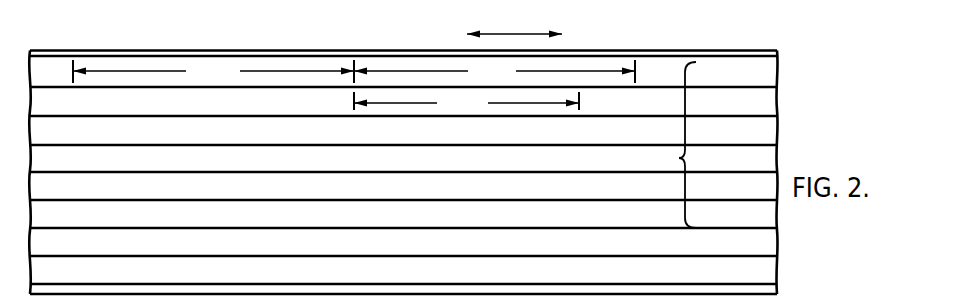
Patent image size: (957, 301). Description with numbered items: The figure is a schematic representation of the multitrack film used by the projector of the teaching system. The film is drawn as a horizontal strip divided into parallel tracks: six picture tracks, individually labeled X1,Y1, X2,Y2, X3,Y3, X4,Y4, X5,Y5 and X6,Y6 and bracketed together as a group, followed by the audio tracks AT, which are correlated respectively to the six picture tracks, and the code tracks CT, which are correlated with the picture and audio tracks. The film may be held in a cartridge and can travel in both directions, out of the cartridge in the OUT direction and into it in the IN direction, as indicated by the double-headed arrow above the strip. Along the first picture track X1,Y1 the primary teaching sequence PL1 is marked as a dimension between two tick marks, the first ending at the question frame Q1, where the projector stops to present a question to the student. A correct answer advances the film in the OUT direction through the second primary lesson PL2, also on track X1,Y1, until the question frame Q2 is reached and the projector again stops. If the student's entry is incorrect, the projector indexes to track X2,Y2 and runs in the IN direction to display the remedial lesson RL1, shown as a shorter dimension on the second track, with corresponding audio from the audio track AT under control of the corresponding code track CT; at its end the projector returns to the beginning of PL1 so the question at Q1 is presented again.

The question frame Q2 is at (73, 67).
The question frame Q1 is at (360, 64).
The second primary lesson PL2 is at (213, 72).
The primary lesson PL1 is at (494, 71).
The remedial lesson RL1 is at (466, 103).
The IN direction IN is at (503, 35).
The OUT direction OUT is at (586, 35).
The picture track X1,Y1 is at (403, 76).
The picture track X2,Y2 is at (403, 105).
The picture track X3,Y3 is at (403, 133).
The picture track X4,Y4 is at (403, 161).
The picture track X5,Y5 is at (403, 188).
The picture track X6,Y6 is at (403, 217).
The audio tracks AT is at (403, 244).
The code tracks CT is at (735, 270).